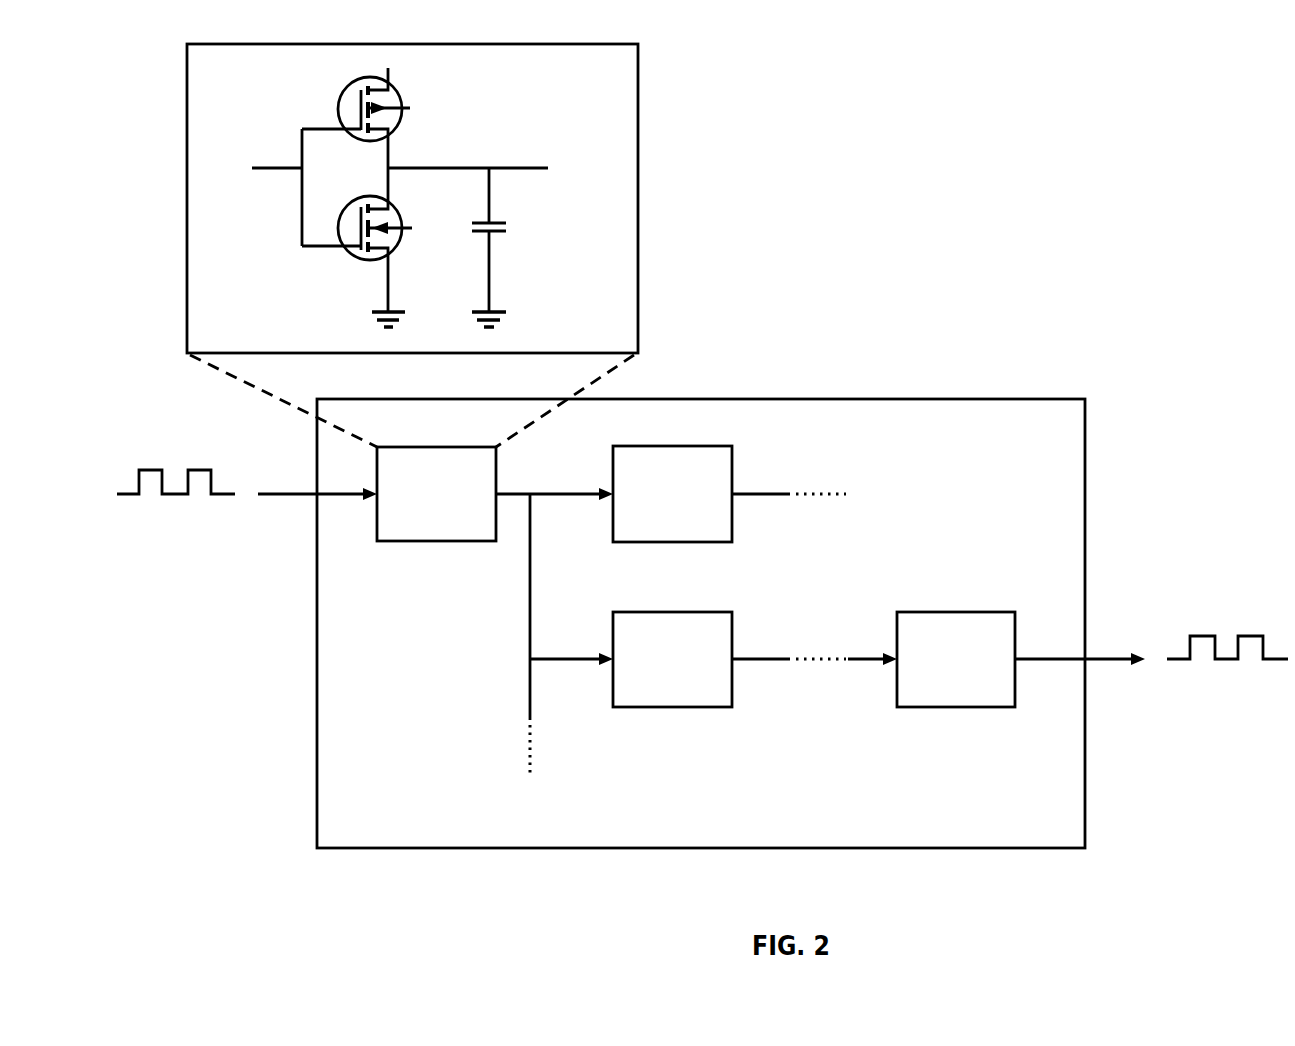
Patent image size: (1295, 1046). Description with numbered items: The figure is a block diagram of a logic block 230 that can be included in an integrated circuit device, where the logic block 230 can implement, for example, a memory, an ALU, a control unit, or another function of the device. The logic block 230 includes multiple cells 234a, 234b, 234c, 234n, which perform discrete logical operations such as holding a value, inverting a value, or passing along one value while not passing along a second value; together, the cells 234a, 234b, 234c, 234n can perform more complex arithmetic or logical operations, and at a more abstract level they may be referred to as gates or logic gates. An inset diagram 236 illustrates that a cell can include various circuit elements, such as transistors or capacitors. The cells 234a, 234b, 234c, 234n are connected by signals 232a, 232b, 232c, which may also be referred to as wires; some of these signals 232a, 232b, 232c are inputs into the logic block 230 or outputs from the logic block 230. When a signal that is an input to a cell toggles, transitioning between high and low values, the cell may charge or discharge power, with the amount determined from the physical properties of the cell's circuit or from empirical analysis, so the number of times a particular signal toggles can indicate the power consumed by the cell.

The logic block 230 is at (718, 840).
The signal 232a is at (283, 496).
The signal 232b is at (530, 612).
The signal 232c is at (872, 652).
The cell 234a is at (459, 522).
The cell 234b is at (696, 522).
The cell 234c is at (696, 687).
The cell 234n is at (979, 687).
The inset diagram 236 is at (638, 281).